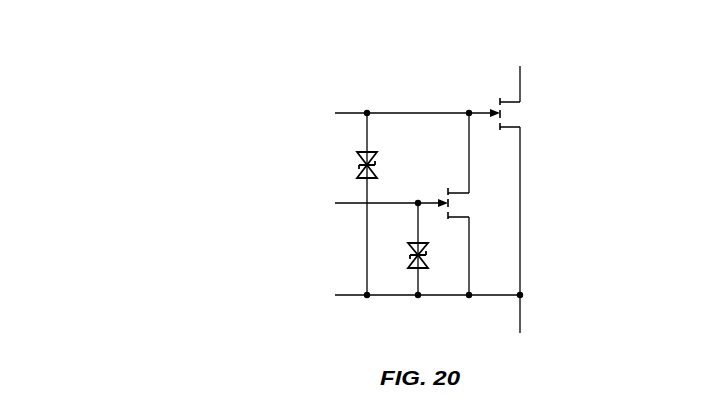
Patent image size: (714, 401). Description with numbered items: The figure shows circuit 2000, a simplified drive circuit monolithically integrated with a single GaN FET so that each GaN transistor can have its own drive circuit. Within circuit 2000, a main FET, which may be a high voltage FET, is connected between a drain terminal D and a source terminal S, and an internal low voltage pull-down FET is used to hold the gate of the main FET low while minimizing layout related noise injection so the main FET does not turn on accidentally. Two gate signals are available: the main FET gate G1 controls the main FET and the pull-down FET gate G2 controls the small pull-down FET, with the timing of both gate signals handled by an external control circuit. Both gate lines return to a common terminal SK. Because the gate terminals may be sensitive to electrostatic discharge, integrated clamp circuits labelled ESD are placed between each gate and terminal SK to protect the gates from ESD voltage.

The circuit 2000 is at (339, 49).
The gate terminal for main FET G1 is at (402, 114).
The gate terminal for pull-down FET G2 is at (376, 204).
The source/kelvin terminal SK is at (412, 295).
The drain terminal D is at (529, 83).
The source terminal S is at (527, 317).
The ESD protection diode ESD is at (365, 204).